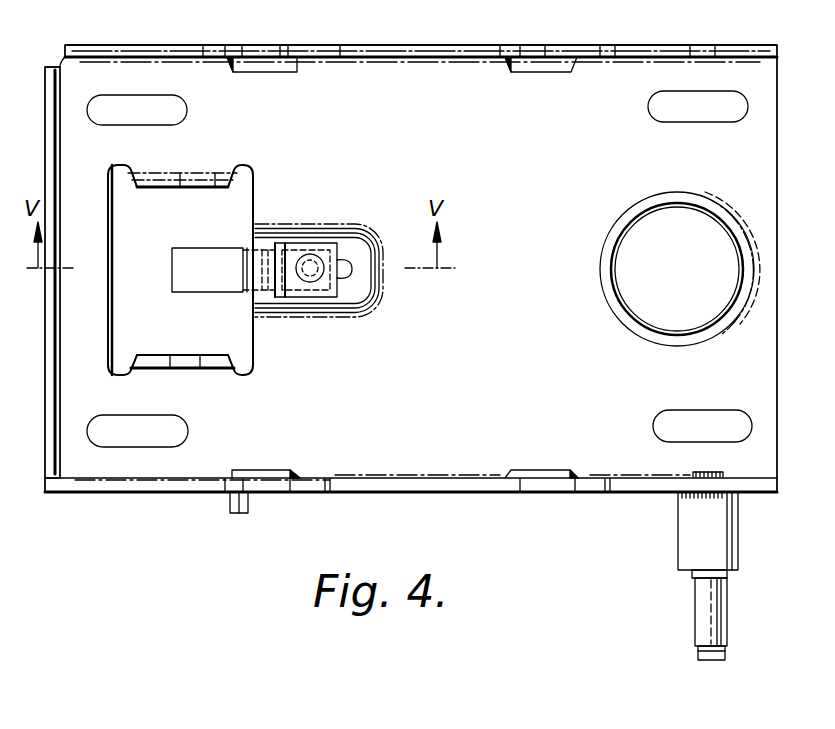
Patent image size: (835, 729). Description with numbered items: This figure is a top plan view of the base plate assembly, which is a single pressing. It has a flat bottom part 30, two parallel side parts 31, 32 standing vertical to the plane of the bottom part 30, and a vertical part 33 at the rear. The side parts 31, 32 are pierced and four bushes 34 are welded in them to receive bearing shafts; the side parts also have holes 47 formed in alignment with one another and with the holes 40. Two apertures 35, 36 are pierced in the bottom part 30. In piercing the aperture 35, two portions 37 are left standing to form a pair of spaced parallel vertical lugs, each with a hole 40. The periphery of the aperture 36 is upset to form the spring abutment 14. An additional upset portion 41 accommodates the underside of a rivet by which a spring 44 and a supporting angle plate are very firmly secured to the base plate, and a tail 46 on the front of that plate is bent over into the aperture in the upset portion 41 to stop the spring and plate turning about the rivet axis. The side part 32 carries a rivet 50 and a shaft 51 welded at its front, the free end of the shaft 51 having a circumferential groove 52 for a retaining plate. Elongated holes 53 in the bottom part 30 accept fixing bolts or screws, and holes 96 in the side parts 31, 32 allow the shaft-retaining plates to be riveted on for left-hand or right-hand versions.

The spring abutment 14 is at (682, 334).
The bottom part 30 is at (510, 389).
The side part 31 is at (422, 49).
The side part 32 is at (420, 486).
The vertical part 33 is at (57, 388).
The bush 34 is at (290, 73).
The aperture 35 is at (253, 205).
The aperture 36 is at (632, 302).
The portion 37 is at (156, 182).
The hole 40 is at (177, 182).
The upset portion 41 is at (352, 238).
The spring 44 is at (183, 280).
The tail 46 is at (340, 275).
The hole 47 is at (178, 50).
The rivet 50 is at (240, 510).
The shaft 51 is at (700, 594).
The circumferential groove 52 is at (700, 652).
The elongated hole 53 is at (180, 115).
The hole 96 is at (336, 495).